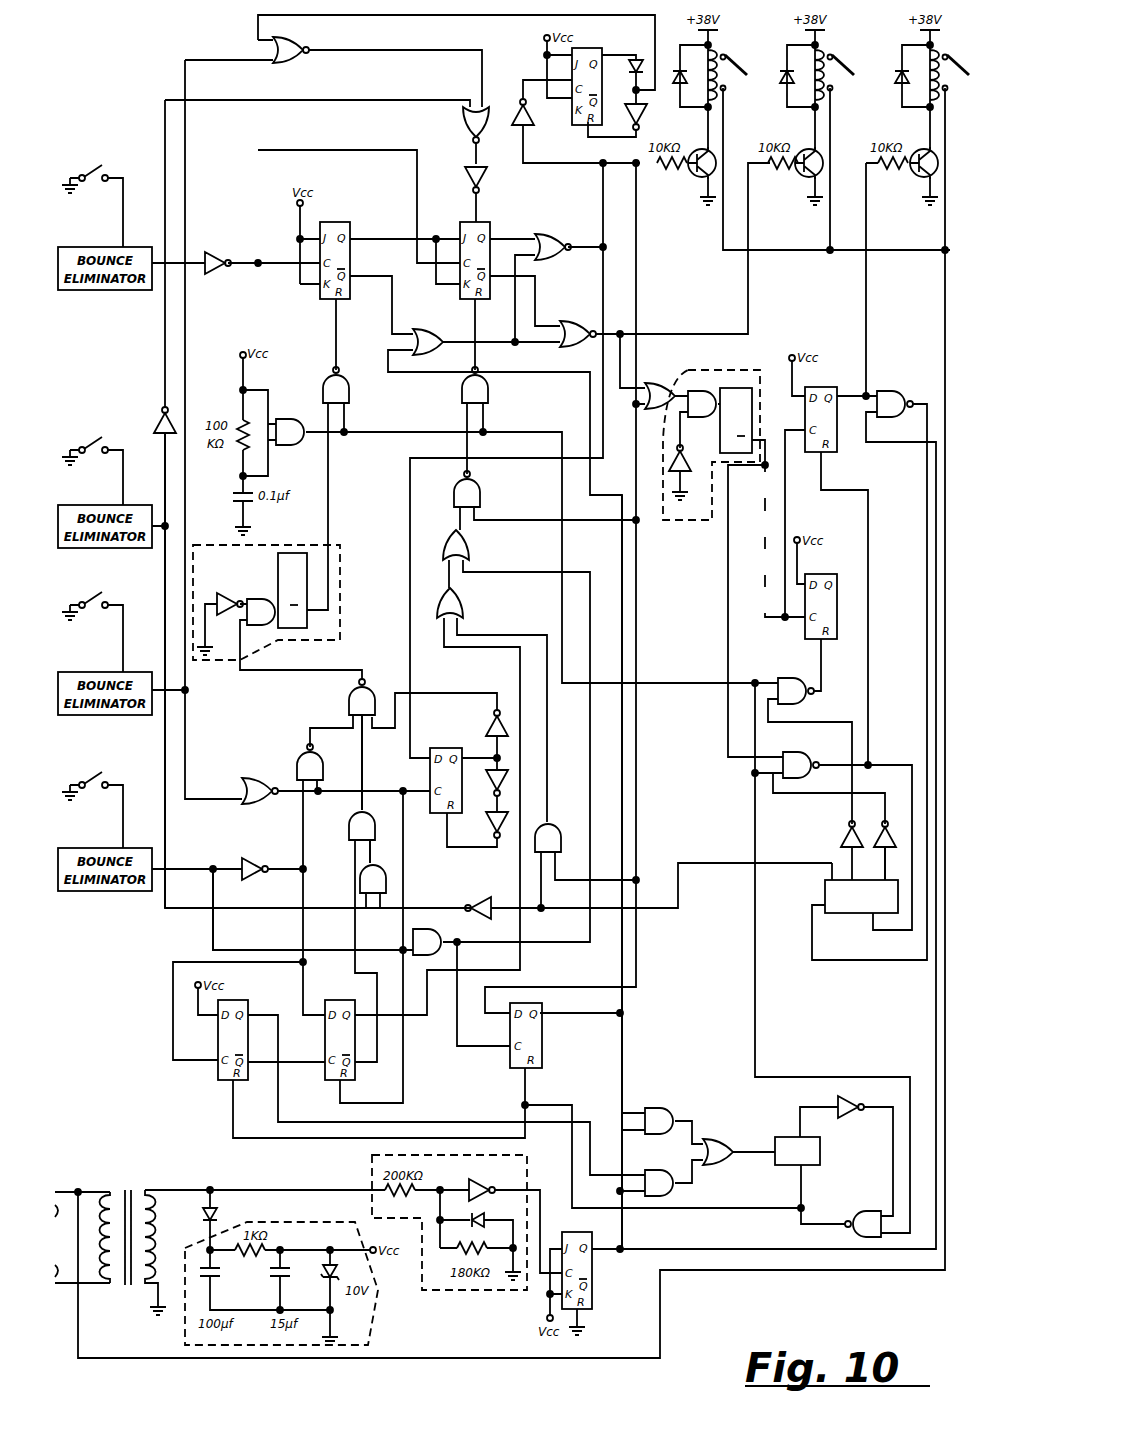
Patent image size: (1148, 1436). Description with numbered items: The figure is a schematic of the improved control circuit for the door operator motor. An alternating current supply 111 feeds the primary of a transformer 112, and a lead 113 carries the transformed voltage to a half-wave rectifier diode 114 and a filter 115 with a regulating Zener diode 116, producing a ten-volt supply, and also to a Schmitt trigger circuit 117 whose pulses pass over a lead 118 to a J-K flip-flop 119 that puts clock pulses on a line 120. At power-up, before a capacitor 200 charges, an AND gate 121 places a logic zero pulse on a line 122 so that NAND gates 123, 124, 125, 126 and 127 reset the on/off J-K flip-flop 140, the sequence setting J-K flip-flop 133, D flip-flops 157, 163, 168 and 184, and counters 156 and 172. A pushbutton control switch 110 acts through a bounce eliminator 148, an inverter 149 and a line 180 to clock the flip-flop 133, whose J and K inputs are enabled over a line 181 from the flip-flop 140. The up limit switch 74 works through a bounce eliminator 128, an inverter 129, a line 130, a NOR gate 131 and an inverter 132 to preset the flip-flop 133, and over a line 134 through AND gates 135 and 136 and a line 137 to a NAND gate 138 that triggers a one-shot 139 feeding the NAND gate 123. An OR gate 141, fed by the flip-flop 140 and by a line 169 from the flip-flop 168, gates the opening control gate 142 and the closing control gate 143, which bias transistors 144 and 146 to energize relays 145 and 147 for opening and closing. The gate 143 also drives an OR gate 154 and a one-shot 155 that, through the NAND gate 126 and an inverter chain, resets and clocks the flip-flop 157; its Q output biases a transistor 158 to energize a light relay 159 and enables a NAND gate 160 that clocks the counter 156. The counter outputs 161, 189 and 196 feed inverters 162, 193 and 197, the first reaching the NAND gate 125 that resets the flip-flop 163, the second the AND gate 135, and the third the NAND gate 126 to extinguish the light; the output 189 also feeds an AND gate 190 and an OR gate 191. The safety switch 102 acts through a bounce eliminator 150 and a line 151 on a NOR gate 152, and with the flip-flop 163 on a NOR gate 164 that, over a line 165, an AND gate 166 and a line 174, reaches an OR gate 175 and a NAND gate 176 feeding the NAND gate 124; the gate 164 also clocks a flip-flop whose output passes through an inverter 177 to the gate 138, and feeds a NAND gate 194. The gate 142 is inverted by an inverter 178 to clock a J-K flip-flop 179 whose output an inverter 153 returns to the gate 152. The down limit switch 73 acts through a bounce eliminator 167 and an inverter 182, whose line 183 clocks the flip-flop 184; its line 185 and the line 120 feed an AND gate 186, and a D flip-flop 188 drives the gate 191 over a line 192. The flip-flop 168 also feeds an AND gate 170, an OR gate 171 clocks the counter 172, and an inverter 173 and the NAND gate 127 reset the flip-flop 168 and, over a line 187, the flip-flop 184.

The pushbutton control switch 110 is at (112, 173).
The bounce eliminator 148 is at (88, 298).
The inverter 149 is at (222, 250).
The line 180 is at (243, 280).
The line 151 is at (191, 143).
The line 130 is at (282, 102).
The NOR gate 152 is at (290, 55).
The NOR gate 131 is at (463, 118).
The inverter 132 is at (462, 178).
The sequence setting J-K flip-flop 133 is at (455, 220).
The on/off J-K flip-flop 140 is at (342, 210).
The line 181 is at (375, 234).
The opening control gate 142 is at (548, 235).
The closing control gate 143 is at (590, 321).
The OR gate 141 is at (450, 332).
The inverter 178 is at (532, 131).
The J-K flip-flop 179 is at (586, 49).
The inverter 153 is at (632, 84).
The relay 145 is at (728, 41).
The relay 147 is at (833, 41).
The relay 159 is at (948, 46).
The transistor 144 is at (696, 184).
The transistor 146 is at (800, 186).
The transistor 158 is at (915, 184).
The inverter 129 is at (160, 414).
The up limit switch 74 is at (115, 446).
The bounce eliminator 128 is at (105, 504).
The safety switch 102 is at (102, 593).
The line 134 is at (163, 592).
The bounce eliminator 150 is at (112, 665).
The down limit switch 73 is at (117, 753).
The bounce eliminator 167 is at (110, 841).
The AND gate 121 is at (308, 408).
The NAND gate 123 is at (354, 383).
The capacitor 200 is at (232, 503).
The one-shot 139 is at (342, 546).
The line 122 is at (393, 433).
The NAND gate 124 is at (493, 403).
The NAND gate 176 is at (483, 493).
The OR gate 175 is at (475, 546).
The OR gate 191 is at (468, 604).
The line 169 is at (625, 594).
The line 192 is at (515, 679).
The OR gate 154 is at (672, 376).
The one-shot 155 is at (727, 369).
The D flip-flop 157 is at (819, 383).
The NAND gate 160 is at (884, 393).
The D flip-flop 163 is at (824, 568).
The NAND gate 125 is at (807, 700).
The NAND gate 126 is at (794, 754).
The inverter 162 is at (843, 835).
The inverter 197 is at (877, 831).
The counter output 161 is at (834, 862).
The counter output 196 is at (880, 875).
The counter 156 is at (858, 921).
The NAND gate 138 is at (350, 693).
The NAND gate 194 is at (340, 766).
The line 137 is at (364, 761).
The inverter 177 is at (493, 719).
The NOR gate 164 is at (280, 783).
The AND gate 136 is at (352, 821).
The inverter 182 is at (260, 866).
The line 183 is at (299, 936).
The AND gate 166 is at (413, 935).
The AND gate 135 is at (383, 862).
The line 165 is at (393, 893).
The inverter 193 is at (505, 894).
The line 174 is at (585, 771).
The AND gate 190 is at (550, 827).
The counter output 189 is at (737, 861).
The D flip-flop 184 is at (236, 1003).
The D flip-flop 188 is at (354, 1003).
The D flip-flop 168 is at (543, 1049).
The line 185 is at (428, 1121).
The AND gate 170 is at (677, 1111).
The OR gate 171 is at (742, 1143).
The counter 172 is at (790, 1139).
The inverter 173 is at (848, 1119).
The NAND gate 127 is at (875, 1213).
The AND gate 186 is at (678, 1193).
The line 187 is at (720, 1215).
The line 120 is at (628, 1244).
The J-K flip-flop 119 is at (592, 1274).
The lead 118 is at (542, 1221).
The Schmitt trigger circuit 117 is at (370, 1165).
The Zener diode 116 is at (368, 1313).
The filter 115 is at (328, 1223).
The transformer 112 is at (135, 1186).
The lead 113 is at (268, 1194).
The half-wave rectifier diode 114 is at (205, 1217).
The alternating current supply 111 is at (70, 1250).